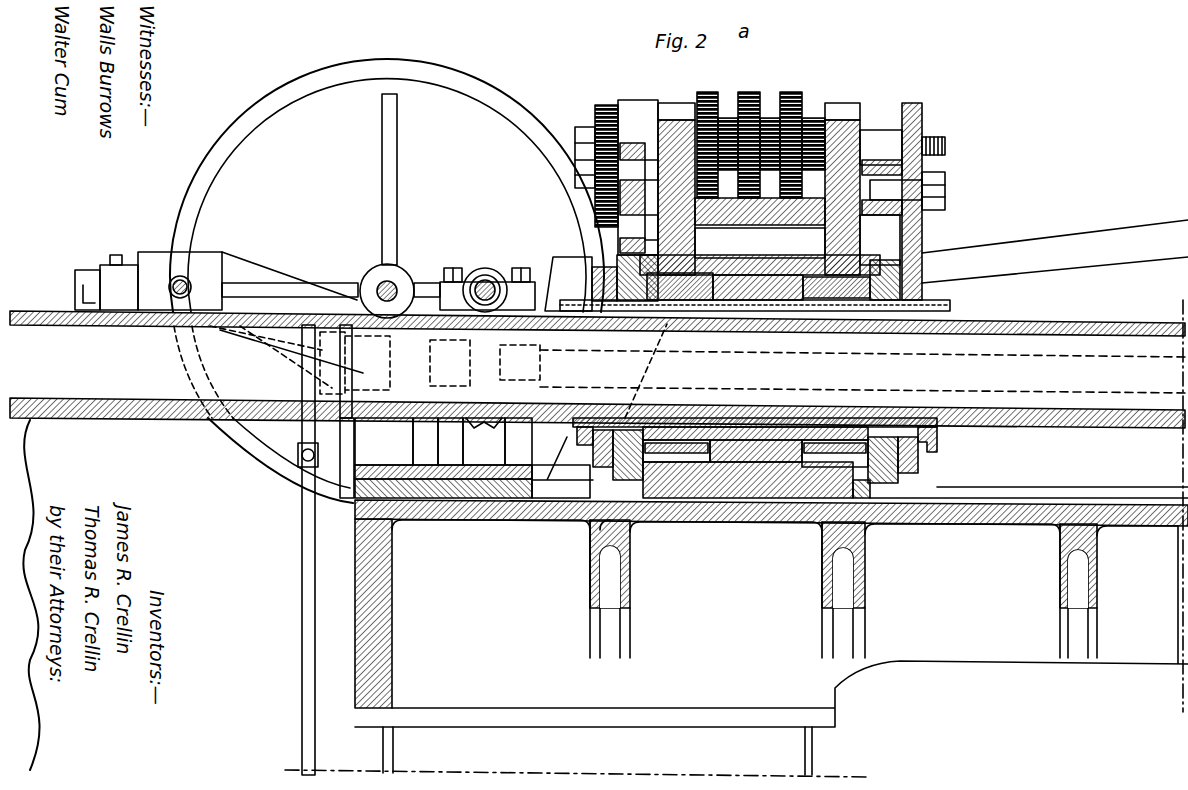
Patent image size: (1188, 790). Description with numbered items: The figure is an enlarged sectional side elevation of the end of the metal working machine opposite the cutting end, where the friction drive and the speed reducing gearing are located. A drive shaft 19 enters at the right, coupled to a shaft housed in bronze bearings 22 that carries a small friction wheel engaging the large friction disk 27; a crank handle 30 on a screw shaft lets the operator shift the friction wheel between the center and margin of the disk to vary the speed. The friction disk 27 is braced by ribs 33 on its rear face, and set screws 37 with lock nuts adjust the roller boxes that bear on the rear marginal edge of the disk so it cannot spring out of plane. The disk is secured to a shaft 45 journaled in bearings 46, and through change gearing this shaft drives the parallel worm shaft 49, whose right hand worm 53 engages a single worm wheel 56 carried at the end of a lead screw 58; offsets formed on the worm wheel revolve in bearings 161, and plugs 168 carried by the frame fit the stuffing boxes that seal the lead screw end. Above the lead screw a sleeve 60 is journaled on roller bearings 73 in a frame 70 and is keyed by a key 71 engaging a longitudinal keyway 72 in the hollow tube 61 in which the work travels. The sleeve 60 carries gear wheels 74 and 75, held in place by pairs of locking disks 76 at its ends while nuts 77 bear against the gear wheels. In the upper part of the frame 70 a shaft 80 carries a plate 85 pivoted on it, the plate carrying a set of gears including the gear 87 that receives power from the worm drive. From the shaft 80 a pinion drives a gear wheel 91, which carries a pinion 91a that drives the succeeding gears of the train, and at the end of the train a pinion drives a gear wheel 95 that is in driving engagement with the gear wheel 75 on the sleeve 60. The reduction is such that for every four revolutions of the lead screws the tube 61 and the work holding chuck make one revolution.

The shaft 19 is at (1055, 251).
The bronze bearings 22 is at (119, 282).
The friction disk 27 is at (288, 100).
The crank handle 30 is at (78, 291).
The ribs 33 is at (394, 201).
The set screws 37 is at (184, 280).
The shaft 45 is at (383, 284).
The bearings 46 is at (406, 270).
The worm shaft 49 is at (488, 282).
The worm 53 is at (477, 270).
The worm wheel 56 is at (484, 441).
The lead screw 58 is at (1087, 380).
The sleeve 60 is at (851, 328).
The tube 61 is at (410, 363).
The frame 70 is at (678, 128).
The key 71 is at (948, 308).
The keyway 72 is at (1072, 318).
The roller bearings 73 is at (690, 285).
The gear wheel 74 is at (596, 455).
The gear wheel 75 is at (924, 278).
The locking disks 76 is at (882, 262).
The nuts 77 is at (590, 287).
The shaft 80 is at (947, 147).
The plate 85 is at (638, 177).
The gear 87 is at (596, 111).
The gear wheel 91 is at (716, 112).
The pinion 91a is at (768, 112).
The gear wheel 95 is at (924, 120).
The bearings 161 is at (448, 441).
The plugs 168 is at (325, 345).